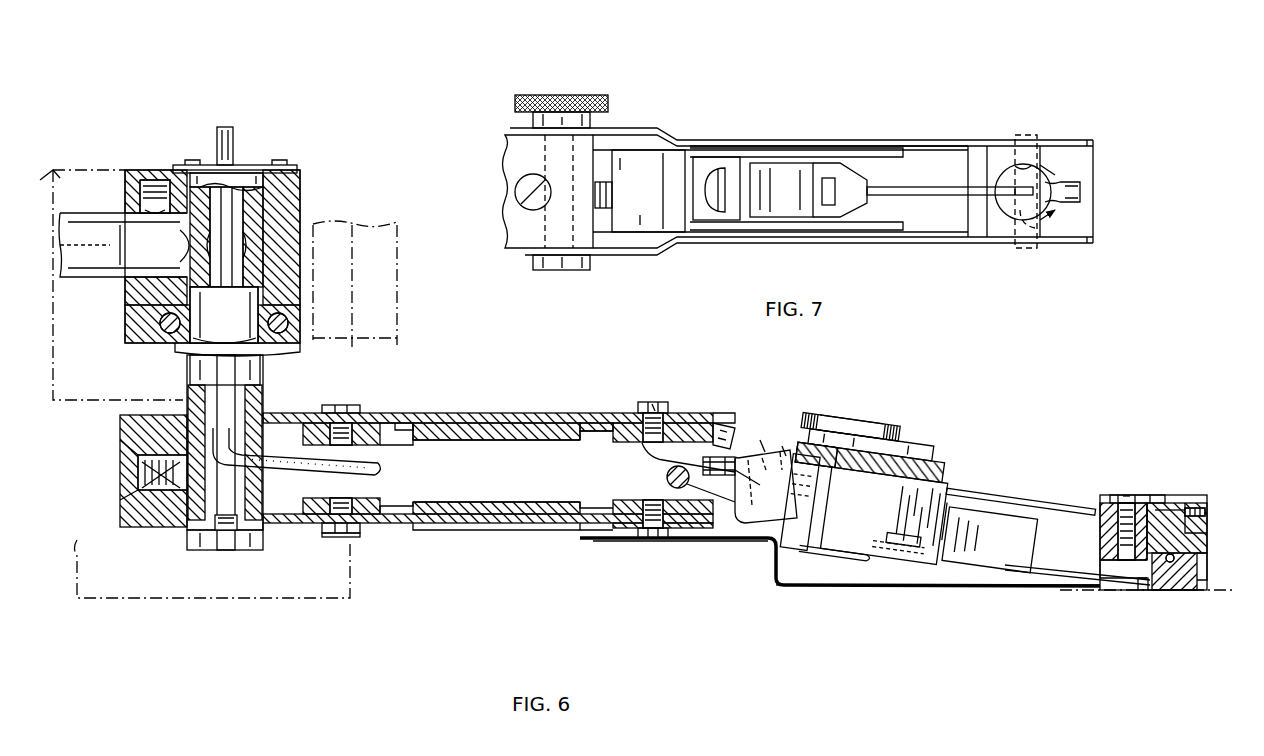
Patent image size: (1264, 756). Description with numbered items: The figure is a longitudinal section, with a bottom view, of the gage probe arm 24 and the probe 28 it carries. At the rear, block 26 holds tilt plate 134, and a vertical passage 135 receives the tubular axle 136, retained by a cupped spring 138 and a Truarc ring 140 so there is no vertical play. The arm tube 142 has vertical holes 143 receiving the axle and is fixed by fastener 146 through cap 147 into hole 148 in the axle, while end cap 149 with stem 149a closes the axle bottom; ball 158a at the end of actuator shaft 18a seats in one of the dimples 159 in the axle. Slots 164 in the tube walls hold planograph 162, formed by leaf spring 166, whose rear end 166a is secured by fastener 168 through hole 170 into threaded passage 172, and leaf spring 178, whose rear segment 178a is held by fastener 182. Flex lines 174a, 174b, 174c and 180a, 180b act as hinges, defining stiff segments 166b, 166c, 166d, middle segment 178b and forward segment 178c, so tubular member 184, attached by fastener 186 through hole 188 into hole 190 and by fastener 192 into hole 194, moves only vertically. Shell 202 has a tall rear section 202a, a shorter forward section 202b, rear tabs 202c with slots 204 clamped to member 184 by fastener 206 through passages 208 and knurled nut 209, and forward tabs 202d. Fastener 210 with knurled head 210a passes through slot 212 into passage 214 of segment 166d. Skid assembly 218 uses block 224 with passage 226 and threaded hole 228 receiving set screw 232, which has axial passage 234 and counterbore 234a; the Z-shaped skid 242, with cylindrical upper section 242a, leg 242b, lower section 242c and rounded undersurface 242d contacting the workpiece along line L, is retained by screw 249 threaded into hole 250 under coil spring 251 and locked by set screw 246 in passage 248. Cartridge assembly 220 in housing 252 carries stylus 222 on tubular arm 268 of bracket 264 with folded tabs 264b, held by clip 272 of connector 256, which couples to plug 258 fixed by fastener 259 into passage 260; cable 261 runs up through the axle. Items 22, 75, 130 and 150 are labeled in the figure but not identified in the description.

In FIG. 6, the actuator shaft 18a is at (116, 283).
In FIG. 6, the tool holder assembly 22 is at (893, 576).
In FIG. 6, the probe arm 24 is at (437, 588).
In FIG. 6, the block 26 is at (290, 192).
In FIG. 6, the probe 28 is at (811, 627).
In FIG. 6, the housing boundary 75 is at (55, 168).
In FIG. 6, the set screw socket 130 is at (153, 178).
In FIG. 6, the tilt plate 134 is at (300, 310).
In FIG. 6, the vertical passage 135 is at (258, 186).
In FIG. 6, the tubular axle 136 is at (190, 375).
In FIG. 6, the cupped spring 138 is at (176, 349).
In FIG. 6, the Truarc ring 140 is at (246, 166).
In FIG. 6, the arm tube 142 is at (393, 420).
In FIG. 6, the vertical holes 143 is at (188, 400).
In FIG. 6, the threaded fastener 146 is at (120, 460).
In FIG. 6, the cap 147 is at (138, 511).
In FIG. 6, the registering hole 148 is at (152, 511).
In FIG. 6, the end cap 149 is at (200, 549).
In FIG. 6, the stem 149a is at (232, 551).
In FIG. 6, the ball bearing 150 is at (300, 331).
In FIG. 6, the ball 158a is at (180, 247).
In FIG. 6, the dimples 159 is at (262, 240).
In FIG. 6, the planograph 162 is at (493, 549).
In FIG. 6, the elongated slots 164 is at (540, 415).
In FIG. 6, the leaf spring 166 is at (500, 421).
In FIG. 6, the rear end of leaf spring 166a is at (380, 433).
In FIG. 6, the inflexible spring segment 166b is at (465, 441).
In FIG. 6, the spring segment 166c is at (686, 422).
In FIG. 6, the forwardmost inflexible segment 166d is at (810, 440).
In FIG. 6, the threaded fastener 168 is at (350, 413).
In FIG. 6, the hole 170 is at (335, 405).
In FIG. 6, the threaded passage 172 is at (301, 467).
In FIG. 6, the spring flex line 174a is at (420, 428).
In FIG. 6, the spring flex line 174b is at (585, 439).
In FIG. 6, the spring flex line 174c is at (728, 420).
In FIG. 6, the second leaf spring 178 is at (520, 502).
In FIG. 6, the rear spring segment 178a is at (418, 502).
In FIG. 6, the lower arm face 178b is at (470, 502).
In FIG. 6, the forward spring segment 178c is at (700, 528).
In FIG. 6, the flex line 180a is at (430, 527).
In FIG. 6, the flex line 180b is at (600, 530).
In FIG. 6, the threaded fastener 182 is at (345, 532).
In FIG. 6, the tubular member 184 is at (682, 541).
In FIG. 7, the tubular member 184 is at (518, 230).
In FIG. 6, the threaded fastener 186 is at (649, 402).
In FIG. 6, the hole 188 is at (645, 412).
In FIG. 6, the hole 190 is at (645, 444).
In FIG. 6, the threaded fastener 192 is at (660, 537).
In FIG. 7, the threaded fastener 192 is at (515, 191).
In FIG. 6, the hole 194 is at (640, 531).
In FIG. 6, the shell 202 is at (782, 586).
In FIG. 6, the rear shell section 202a is at (936, 461).
In FIG. 7, the rear shell section 202a is at (776, 140).
In FIG. 6, the forward shell section 202b is at (1000, 497).
In FIG. 7, the forward shell section 202b is at (955, 245).
In FIG. 6, the side wall tabs 202c is at (763, 543).
In FIG. 7, the side wall tabs 202c is at (636, 128).
In FIG. 7, the shell extension tabs 202d is at (1086, 140).
In FIG. 6, the slots 204 is at (667, 479).
In FIG. 6, the headed threaded fastener 206 is at (776, 521).
In FIG. 7, the headed threaded fastener 206 is at (560, 155).
In FIG. 6, the passages 208 is at (667, 477).
In FIG. 7, the passages 208 is at (545, 121).
In FIG. 7, the knurled nut 209 is at (573, 98).
In FIG. 6, the threaded fastener 210 is at (878, 424).
In FIG. 6, the knurled head 210a is at (852, 426).
In FIG. 6, the lengthwise slot 212 is at (836, 432).
In FIG. 6, the passage 214 is at (841, 466).
In FIG. 6, the skid assembly 218 is at (1138, 442).
In FIG. 7, the skid assembly 218 is at (661, 251).
In FIG. 7, the cartridge assembly 220 is at (856, 150).
In FIG. 6, the stylus 222 is at (1146, 592).
In FIG. 7, the stylus 222 is at (1020, 192).
In FIG. 6, the block 224 is at (1195, 546).
In FIG. 7, the block 224 is at (1090, 166).
In FIG. 6, the cylindrical passage 226 is at (1176, 560).
In FIG. 7, the cylindrical passage 226 is at (1023, 163).
In FIG. 6, the threaded hole 228 is at (1160, 510).
In FIG. 6, the set screw 232 is at (1112, 498).
In FIG. 6, the axial passage 234 is at (1141, 500).
In FIG. 6, the counterbore 234a is at (1121, 500).
In FIG. 6, the skid 242 is at (1110, 549).
In FIG. 7, the skid 242 is at (1006, 170).
In FIG. 6, the skid upper section 242a is at (1106, 577).
In FIG. 7, the skid upper section 242a is at (1012, 211).
In FIG. 6, the vertical leg 242b is at (1162, 596).
In FIG. 6, the skid lower section 242c is at (1186, 596).
In FIG. 7, the skid lower section 242c is at (1047, 134).
In FIG. 6, the rounded undersurface 242d is at (1190, 600).
In FIG. 6, the set screw 246 is at (1205, 512).
In FIG. 6, the passage 248 is at (1200, 520).
In FIG. 6, the screw 249 is at (1126, 494).
In FIG. 6, the axial threaded hole 250 is at (1105, 531).
In FIG. 6, the coil spring 251 is at (1150, 505).
In FIG. 6, the cartridge housing 252 is at (956, 576).
In FIG. 6, the female connector 256 is at (801, 561).
In FIG. 6, the plug 258 is at (752, 526).
In FIG. 6, the threaded fastener 259 is at (762, 440).
In FIG. 6, the threaded passage 260 is at (782, 446).
In FIG. 6, the cable 261 is at (215, 138).
In FIG. 7, the cable 261 is at (640, 191).
In FIG. 6, the bracket 264 is at (905, 556).
In FIG. 6, the tabs 264b is at (886, 540).
In FIG. 6, the stylus arm 268 is at (1046, 581).
In FIG. 7, the stylus arm 268 is at (940, 196).
In FIG. 6, the clip 272 is at (838, 560).
In FIG. 6, the transverse line L is at (1173, 625).